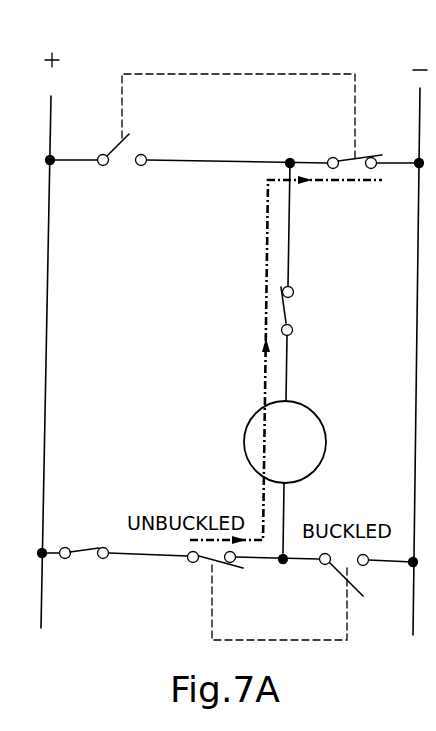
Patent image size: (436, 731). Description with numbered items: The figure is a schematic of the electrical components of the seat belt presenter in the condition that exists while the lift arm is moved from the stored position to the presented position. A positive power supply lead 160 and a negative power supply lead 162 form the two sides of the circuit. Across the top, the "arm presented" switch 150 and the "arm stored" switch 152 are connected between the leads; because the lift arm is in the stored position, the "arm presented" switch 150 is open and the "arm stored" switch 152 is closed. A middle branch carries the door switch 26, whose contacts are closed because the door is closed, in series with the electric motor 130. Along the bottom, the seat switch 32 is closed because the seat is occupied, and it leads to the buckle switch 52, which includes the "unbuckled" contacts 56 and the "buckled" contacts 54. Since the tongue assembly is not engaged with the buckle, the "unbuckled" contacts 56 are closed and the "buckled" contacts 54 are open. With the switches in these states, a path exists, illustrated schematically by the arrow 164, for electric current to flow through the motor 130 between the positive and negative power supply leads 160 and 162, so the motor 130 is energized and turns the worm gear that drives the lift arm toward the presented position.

The positive power supply lead 160 is at (51, 96).
The negative power supply lead 162 is at (420, 108).
The arm presented switch 150 is at (131, 134).
The arm stored switch 152 is at (346, 157).
The door switch 26 is at (293, 331).
The electric motor 130 is at (307, 401).
The arrow 164 is at (266, 318).
The seat switch 32 is at (87, 548).
The unbuckled electrical contacts 56 is at (203, 562).
The buckle switch 52 is at (258, 637).
The buckled electrical contacts 54 is at (355, 585).